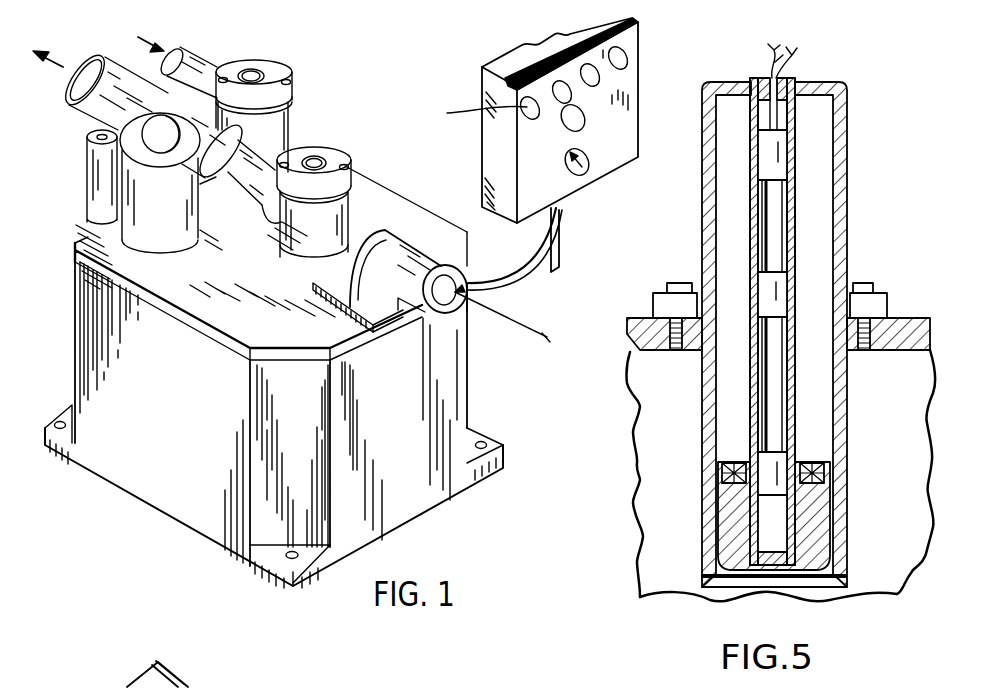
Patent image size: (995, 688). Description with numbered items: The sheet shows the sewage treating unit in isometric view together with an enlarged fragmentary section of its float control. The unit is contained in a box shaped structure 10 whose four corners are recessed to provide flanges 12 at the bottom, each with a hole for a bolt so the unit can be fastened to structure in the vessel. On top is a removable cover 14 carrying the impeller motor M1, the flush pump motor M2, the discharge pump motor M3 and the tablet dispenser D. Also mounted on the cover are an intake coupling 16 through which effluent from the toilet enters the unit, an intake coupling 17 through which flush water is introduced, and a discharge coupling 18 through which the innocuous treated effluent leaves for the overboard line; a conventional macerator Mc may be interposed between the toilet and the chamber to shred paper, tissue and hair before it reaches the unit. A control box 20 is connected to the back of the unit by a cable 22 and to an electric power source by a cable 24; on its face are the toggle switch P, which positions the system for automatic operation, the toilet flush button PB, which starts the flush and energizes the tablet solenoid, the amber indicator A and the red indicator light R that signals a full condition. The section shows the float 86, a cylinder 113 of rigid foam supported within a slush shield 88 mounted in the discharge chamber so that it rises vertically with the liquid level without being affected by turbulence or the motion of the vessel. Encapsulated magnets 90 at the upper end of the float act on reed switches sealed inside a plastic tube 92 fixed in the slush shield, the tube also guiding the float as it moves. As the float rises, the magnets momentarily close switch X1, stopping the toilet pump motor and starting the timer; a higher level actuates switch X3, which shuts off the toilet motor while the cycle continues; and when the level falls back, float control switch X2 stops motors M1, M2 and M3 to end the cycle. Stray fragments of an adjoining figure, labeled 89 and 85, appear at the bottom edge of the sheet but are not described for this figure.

In FIG. 1, the box shaped structure 10 is at (133, 502).
In FIG. 1, the flanges 12 is at (72, 412).
In FIG. 1, the removable cover 14 is at (212, 332).
In FIG. 1, the intake coupling 16 is at (407, 253).
In FIG. 1, the intake coupling 17 is at (198, 67).
In FIG. 1, the discharge coupling 18 is at (102, 73).
In FIG. 1, the control box 20 is at (511, 120).
In FIG. 1, the cable 22 is at (498, 275).
In FIG. 1, the cable 24 is at (559, 248).
In FIG. 1, the impeller motor M1 is at (330, 228).
In FIG. 1, the flush pump motor M2 is at (273, 142).
In FIG. 1, the discharge pump motor M3 is at (178, 206).
In FIG. 1, the dispenser D is at (242, 207).
In FIG. 1, the macerator Mc is at (543, 337).
In FIG. 1, the toilet flush button PB is at (532, 124).
In FIG. 1, the amber indicator A is at (628, 58).
In FIG. 1, the red indicator light R is at (592, 78).
In FIG. 1, the toggle switch P is at (583, 176).
In FIG. 5, the switch X1 is at (797, 284).
In FIG. 5, the float control switch X2 is at (792, 470).
In FIG. 5, the switch X3 is at (779, 154).
In FIG. 5, the float 86 is at (720, 544).
In FIG. 5, the slush shield 88 is at (837, 397).
In FIG. 5, the encapsulated magnets 90 is at (722, 462).
In FIG. 5, the plastic tube 92 is at (752, 380).
In FIG. 5, the cylinder of rigid foam 113 is at (817, 530).
In FIG. 5, the bracket 89 is at (190, 687).
In FIG. 5, the probe 85 is at (652, 687).